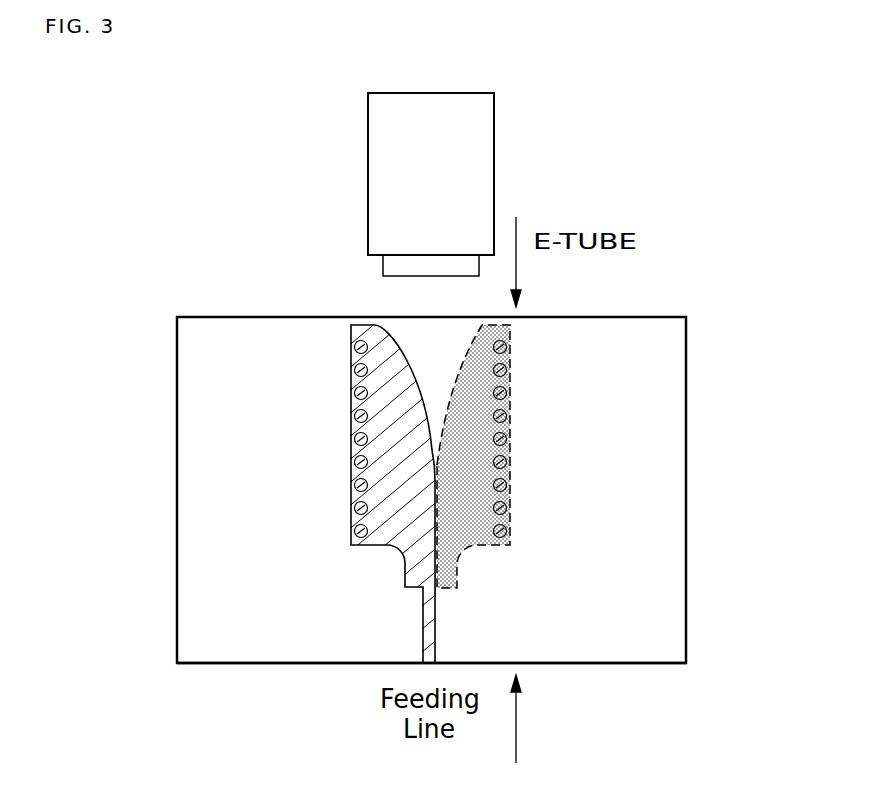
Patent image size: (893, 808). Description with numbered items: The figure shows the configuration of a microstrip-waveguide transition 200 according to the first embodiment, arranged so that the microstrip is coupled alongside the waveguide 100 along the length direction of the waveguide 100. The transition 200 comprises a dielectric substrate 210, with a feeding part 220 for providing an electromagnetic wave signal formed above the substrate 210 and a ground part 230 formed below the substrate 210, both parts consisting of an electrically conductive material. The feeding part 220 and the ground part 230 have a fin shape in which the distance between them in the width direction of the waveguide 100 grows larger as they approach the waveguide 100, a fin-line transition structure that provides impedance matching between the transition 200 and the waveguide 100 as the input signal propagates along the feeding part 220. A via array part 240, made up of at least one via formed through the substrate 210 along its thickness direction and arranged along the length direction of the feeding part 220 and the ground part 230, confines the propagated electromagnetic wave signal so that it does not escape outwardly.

The waveguide 100 is at (368, 172).
The microstrip-waveguide transition 200 is at (177, 472).
The substrate 210 is at (233, 655).
The feeding part 220 is at (388, 499).
The ground part 230 is at (478, 548).
The via array part 240 is at (360, 392).